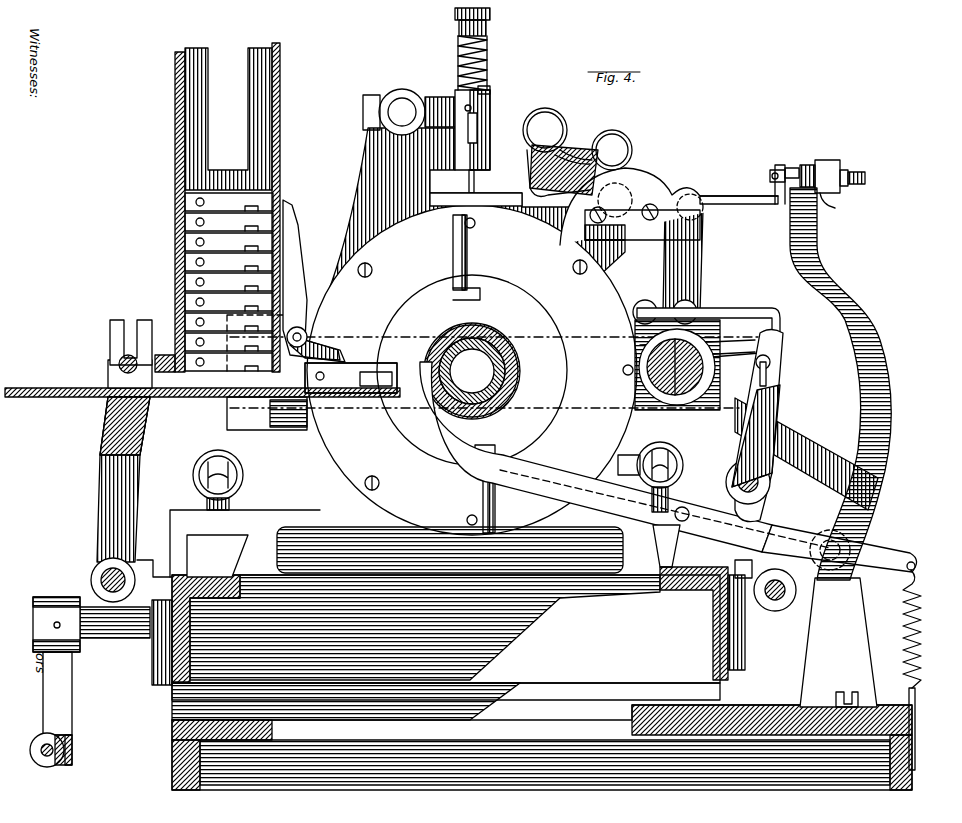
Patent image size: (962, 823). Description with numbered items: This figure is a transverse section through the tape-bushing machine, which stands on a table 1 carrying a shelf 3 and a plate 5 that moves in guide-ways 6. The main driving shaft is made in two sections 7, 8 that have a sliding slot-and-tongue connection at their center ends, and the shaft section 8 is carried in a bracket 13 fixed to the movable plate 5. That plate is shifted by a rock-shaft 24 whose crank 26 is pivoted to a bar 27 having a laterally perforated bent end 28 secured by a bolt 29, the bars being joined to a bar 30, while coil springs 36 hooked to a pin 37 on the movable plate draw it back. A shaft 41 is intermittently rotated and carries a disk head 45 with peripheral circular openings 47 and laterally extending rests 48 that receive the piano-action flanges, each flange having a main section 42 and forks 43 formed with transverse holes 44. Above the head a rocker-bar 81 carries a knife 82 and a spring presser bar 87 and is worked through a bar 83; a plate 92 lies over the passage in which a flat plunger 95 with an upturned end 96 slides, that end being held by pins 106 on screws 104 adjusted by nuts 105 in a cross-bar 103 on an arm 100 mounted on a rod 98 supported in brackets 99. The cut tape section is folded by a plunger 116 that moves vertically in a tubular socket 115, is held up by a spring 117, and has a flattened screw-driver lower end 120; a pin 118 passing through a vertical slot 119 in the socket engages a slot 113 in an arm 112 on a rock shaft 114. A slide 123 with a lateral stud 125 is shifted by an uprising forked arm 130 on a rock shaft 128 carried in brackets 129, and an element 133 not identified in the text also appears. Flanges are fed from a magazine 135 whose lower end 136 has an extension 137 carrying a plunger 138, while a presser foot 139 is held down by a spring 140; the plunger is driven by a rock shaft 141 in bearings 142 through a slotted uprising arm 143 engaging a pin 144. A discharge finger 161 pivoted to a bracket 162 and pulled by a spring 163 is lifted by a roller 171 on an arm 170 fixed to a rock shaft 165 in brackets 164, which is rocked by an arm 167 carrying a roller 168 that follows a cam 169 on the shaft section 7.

The table 1 is at (172, 765).
The shelf 3 is at (172, 678).
The movable plate 5 is at (268, 510).
The guide-ways 6 is at (195, 548).
The shaft section 7 is at (760, 375).
The shaft section 8 is at (765, 354).
The bracket 13 is at (366, 180).
The rock-shaft 24 is at (130, 638).
The crank 26 is at (72, 692).
The bar 27 is at (60, 765).
The bent end 28 is at (49, 767).
The bolt 29 is at (44, 744).
The bar 30 is at (72, 752).
The coil springs 36 is at (193, 476).
The pin 37 is at (207, 503).
The shaft 41 is at (495, 345).
The main section 42 is at (378, 364).
The forks 43 is at (185, 200).
The transverse holes 44 is at (195, 204).
The disk head 45 is at (612, 282).
The peripheral circular openings 47 is at (476, 226).
The rests 48 is at (466, 250).
The rocker-bar 81 is at (655, 185).
The knife 82 is at (528, 190).
The bar 83 is at (704, 265).
The spring presser bar 87 is at (577, 144).
The plate 92 is at (485, 194).
The flat plunger 95 is at (745, 196).
The upturned end 96 is at (784, 166).
The rod 98 is at (778, 612).
The brackets 99 is at (745, 650).
The arm 100 is at (893, 398).
The cross-bar 103 is at (832, 163).
The screws 104 is at (866, 178).
The nuts 105 is at (838, 204).
The pins 106 is at (768, 170).
The arm 112 is at (432, 97).
The slot 113 is at (474, 108).
The rock shaft 114 is at (402, 108).
The tubular socket 115 is at (490, 90).
The plunger 116 is at (487, 64).
The spring 117 is at (487, 46).
The pin 118 is at (490, 118).
The vertical slot 119 is at (478, 140).
The lower end 120 is at (469, 188).
The slide 123 is at (290, 425).
The stud 125 is at (770, 362).
The rock shaft 128 is at (771, 488).
The brackets 129 is at (752, 514).
The forked arm 130 is at (778, 410).
The plate 133 is at (752, 308).
The magazine 135 is at (282, 95).
The lower end 136 is at (220, 398).
The extension 137 is at (40, 397).
The plunger 138 is at (108, 372).
The presser foot 139 is at (320, 350).
The spring 140 is at (300, 222).
The rock shaft 141 is at (92, 573).
The bearings 142 is at (152, 668).
The uprising arm 143 is at (98, 495).
The pin 144 is at (130, 355).
The discharge finger 161 is at (445, 445).
The bracket 162 is at (662, 575).
The spring 163 is at (922, 627).
The brackets 164 is at (838, 642).
The rock shaft 165 is at (860, 556).
The arm 167 is at (830, 450).
The roller 168 is at (715, 420).
The cam 169 is at (708, 322).
The arm 170 is at (735, 548).
The roller 171 is at (740, 570).